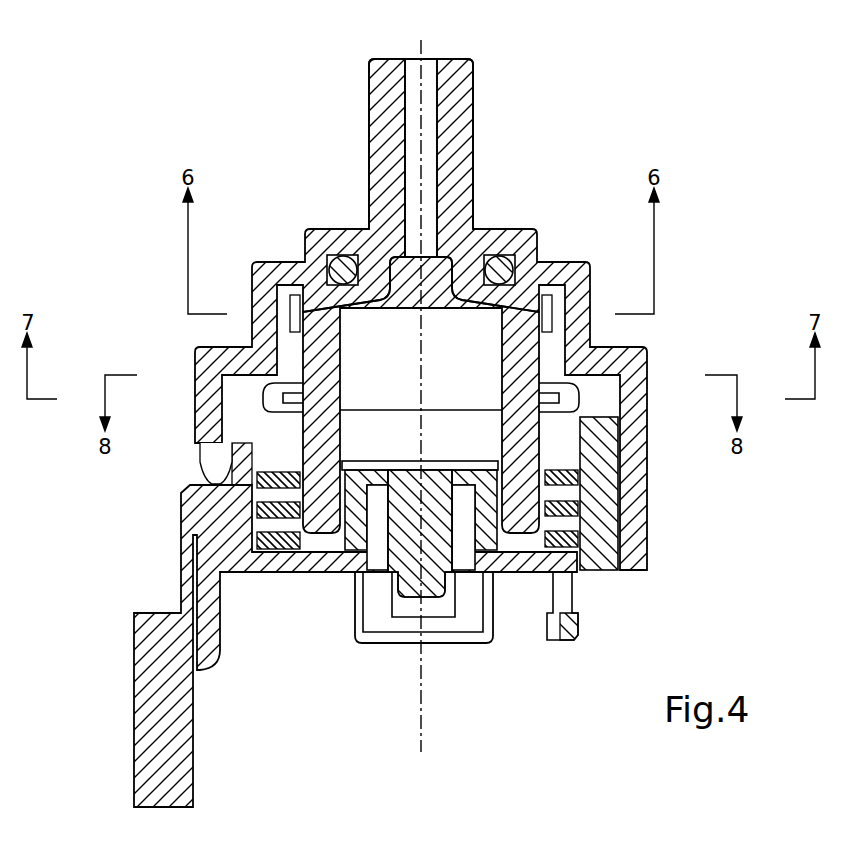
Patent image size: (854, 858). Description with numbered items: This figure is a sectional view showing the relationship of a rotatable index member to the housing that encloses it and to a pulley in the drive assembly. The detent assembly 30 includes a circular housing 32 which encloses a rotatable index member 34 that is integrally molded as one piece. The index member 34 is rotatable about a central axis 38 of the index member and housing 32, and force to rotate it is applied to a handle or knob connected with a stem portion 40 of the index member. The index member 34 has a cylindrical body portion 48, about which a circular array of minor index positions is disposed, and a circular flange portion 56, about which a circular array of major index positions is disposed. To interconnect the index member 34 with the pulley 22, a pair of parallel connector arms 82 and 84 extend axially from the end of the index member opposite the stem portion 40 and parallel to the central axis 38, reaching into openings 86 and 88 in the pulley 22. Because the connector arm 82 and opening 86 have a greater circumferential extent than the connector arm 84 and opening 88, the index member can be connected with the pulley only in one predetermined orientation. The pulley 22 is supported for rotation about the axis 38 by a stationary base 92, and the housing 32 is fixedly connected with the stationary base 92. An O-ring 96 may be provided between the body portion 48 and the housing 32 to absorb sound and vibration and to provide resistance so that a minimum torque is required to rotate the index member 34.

The detent assembly 30 is at (414, 408).
The circular housing 32 is at (540, 242).
The rotatable index member 34 is at (476, 92).
The stem portion 40 is at (393, 145).
The O-ring 96 is at (330, 262).
The cylindrical body portion 48 is at (325, 324).
The circular flange portion 56 is at (282, 400).
The pulley 22 is at (585, 502).
The stationary base 92 is at (213, 567).
The opening 88 is at (545, 575).
The opening 86 is at (318, 544).
The connector arm 82 is at (323, 522).
The connector arm 84 is at (520, 527).
The central axis 38 is at (421, 660).